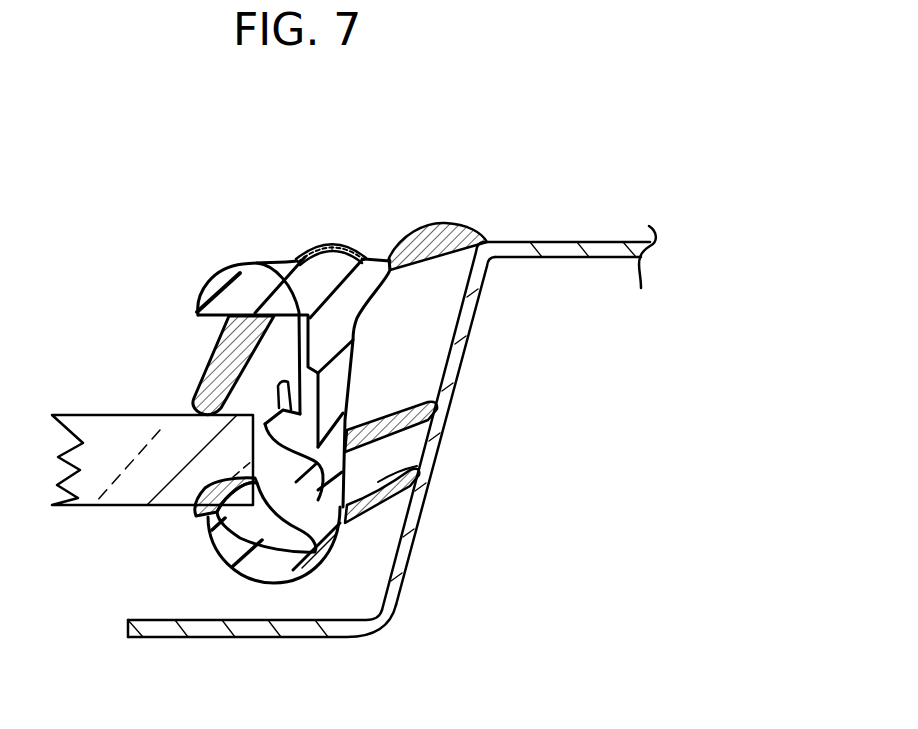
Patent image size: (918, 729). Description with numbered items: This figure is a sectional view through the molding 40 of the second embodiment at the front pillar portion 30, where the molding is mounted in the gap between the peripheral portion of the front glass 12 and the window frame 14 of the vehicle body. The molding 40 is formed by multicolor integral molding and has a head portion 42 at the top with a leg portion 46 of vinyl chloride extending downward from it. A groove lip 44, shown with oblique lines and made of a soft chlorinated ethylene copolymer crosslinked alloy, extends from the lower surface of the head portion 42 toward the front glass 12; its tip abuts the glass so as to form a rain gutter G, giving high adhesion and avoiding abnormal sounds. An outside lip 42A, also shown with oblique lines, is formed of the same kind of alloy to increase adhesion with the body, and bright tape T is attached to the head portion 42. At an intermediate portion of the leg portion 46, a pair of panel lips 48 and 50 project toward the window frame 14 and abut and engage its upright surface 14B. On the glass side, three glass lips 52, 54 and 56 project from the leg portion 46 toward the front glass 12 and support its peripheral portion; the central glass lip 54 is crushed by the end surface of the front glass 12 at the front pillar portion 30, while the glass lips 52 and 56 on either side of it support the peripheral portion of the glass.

The front glass 12 is at (107, 497).
The window frame 14 is at (350, 650).
The upright surface 14B is at (411, 548).
The front pillar portion 30 is at (583, 232).
The molding 40 is at (335, 379).
The head portion 42 is at (325, 243).
The outside lip 42A is at (455, 224).
The groove lip 44 is at (217, 368).
The leg portion 46 is at (337, 380).
The panel lip 48 is at (441, 437).
The panel lip 50 is at (423, 503).
The glass lip 52 is at (228, 553).
The glass lip 54 is at (215, 497).
The glass lip 56 is at (262, 260).
The bright tape T is at (334, 240).
The rain gutter G is at (180, 375).